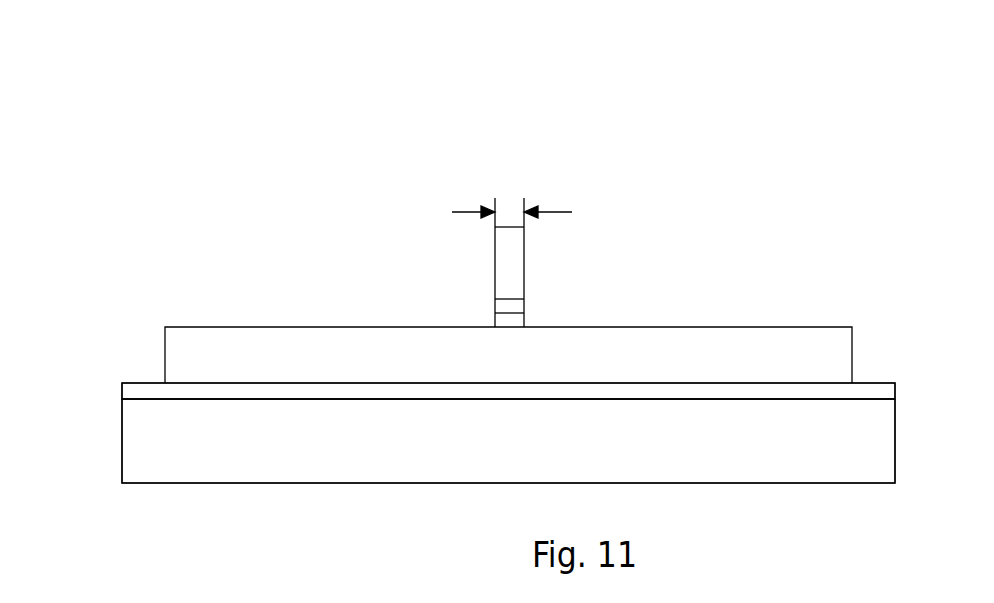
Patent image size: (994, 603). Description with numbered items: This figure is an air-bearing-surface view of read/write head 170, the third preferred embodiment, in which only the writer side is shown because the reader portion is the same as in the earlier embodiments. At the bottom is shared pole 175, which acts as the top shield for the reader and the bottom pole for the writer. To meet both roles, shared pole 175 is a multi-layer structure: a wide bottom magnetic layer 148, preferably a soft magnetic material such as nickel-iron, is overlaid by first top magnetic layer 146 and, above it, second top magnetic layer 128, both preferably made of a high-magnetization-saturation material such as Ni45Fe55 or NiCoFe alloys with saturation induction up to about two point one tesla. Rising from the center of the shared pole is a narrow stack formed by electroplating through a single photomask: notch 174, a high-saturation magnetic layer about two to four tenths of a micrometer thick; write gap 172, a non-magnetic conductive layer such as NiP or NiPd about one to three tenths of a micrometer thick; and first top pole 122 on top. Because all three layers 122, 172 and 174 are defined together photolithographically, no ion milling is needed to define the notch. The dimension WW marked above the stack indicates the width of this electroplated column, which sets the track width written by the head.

The read/write head 170 is at (215, 120).
The shared pole 175 is at (107, 306).
The bottom magnetic layer 148 is at (725, 442).
The first top magnetic layer 146 is at (678, 390).
The second top magnetic layer 128 is at (642, 368).
The first top pole 122 is at (509, 284).
The write gap 172 is at (505, 307).
The notch 174 is at (510, 322).
The waveguide width WW is at (512, 194).